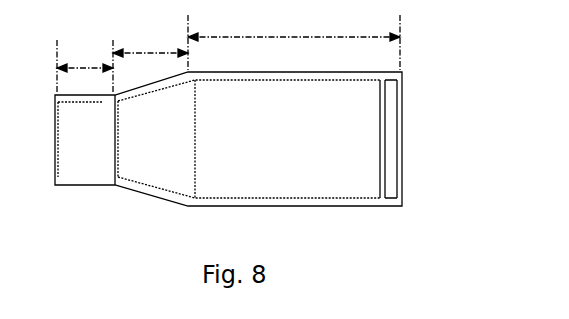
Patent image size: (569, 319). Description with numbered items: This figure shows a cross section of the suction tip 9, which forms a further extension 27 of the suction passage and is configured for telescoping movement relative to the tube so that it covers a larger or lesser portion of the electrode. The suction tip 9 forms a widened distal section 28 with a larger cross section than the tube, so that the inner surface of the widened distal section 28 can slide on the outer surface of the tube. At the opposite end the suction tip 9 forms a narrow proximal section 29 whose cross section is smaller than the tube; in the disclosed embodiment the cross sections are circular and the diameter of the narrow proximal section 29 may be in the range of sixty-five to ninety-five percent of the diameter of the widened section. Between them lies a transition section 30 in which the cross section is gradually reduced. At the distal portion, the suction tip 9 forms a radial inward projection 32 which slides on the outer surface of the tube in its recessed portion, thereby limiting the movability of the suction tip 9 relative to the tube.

The suction tip 9 is at (437, 120).
The further extension of the suction passage 27 is at (283, 156).
The widened distal section 28 is at (294, 39).
The narrow proximal section 29 is at (85, 64).
The transition section 30 is at (150, 40).
The radial inward projection 32 is at (401, 81).